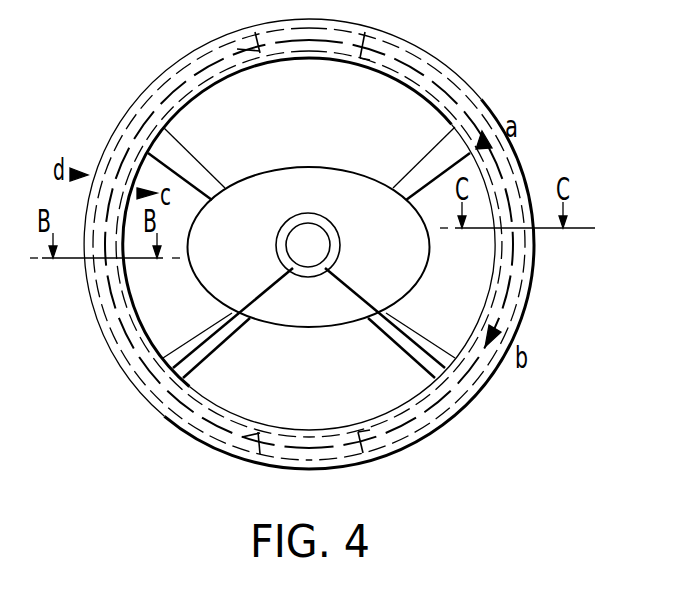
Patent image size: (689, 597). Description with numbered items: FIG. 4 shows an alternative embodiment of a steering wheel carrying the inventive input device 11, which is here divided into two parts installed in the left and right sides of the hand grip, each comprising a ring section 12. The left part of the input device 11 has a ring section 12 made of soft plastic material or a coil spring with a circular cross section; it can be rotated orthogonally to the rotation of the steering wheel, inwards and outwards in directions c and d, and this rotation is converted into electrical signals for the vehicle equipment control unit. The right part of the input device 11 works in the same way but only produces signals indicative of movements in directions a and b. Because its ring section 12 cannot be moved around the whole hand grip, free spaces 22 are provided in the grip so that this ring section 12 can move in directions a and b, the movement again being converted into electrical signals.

The input device 11 is at (165, 85).
The ring section 12 is at (132, 143).
The free spaces 22 is at (421, 69).